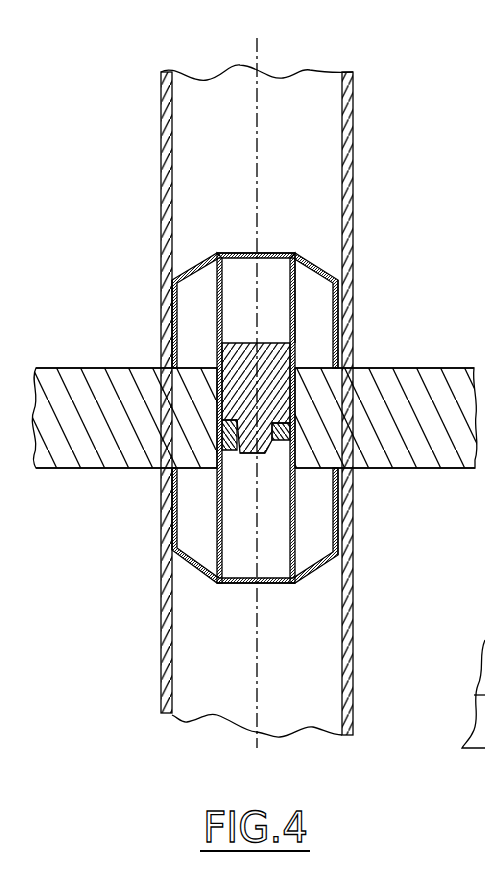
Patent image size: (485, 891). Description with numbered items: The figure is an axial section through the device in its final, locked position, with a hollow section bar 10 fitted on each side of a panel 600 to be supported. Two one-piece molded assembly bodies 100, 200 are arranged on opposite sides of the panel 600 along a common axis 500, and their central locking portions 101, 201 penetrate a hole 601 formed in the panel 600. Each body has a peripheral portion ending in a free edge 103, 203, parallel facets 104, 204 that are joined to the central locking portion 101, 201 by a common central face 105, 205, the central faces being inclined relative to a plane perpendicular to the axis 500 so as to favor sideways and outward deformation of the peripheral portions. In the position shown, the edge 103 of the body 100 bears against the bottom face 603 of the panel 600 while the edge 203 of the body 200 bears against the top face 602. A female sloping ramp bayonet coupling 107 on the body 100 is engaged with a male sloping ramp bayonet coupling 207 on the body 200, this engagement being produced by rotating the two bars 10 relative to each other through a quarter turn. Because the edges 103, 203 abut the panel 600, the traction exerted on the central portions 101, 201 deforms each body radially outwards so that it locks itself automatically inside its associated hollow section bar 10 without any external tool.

The hollow section bar 10 is at (352, 124).
The assembly body 100 is at (185, 566).
The central locking portion 101 is at (292, 527).
The free edge 103 is at (343, 456).
The parallel facets 104 is at (161, 503).
The common central face 105 is at (312, 582).
The female sloping ramp bayonet coupling 107 is at (229, 455).
The assembly body 200 is at (193, 262).
The central locking portion 201 is at (295, 299).
The free edge 203 is at (347, 377).
The parallel facets 204 is at (167, 300).
The common central face 205 is at (317, 264).
The male sloping ramp bayonet coupling 207 is at (268, 456).
The common axis 500 is at (258, 73).
The panel 600 is at (66, 360).
The hole 601 is at (228, 374).
The top face 602 is at (112, 367).
The bottom face 603 is at (105, 470).